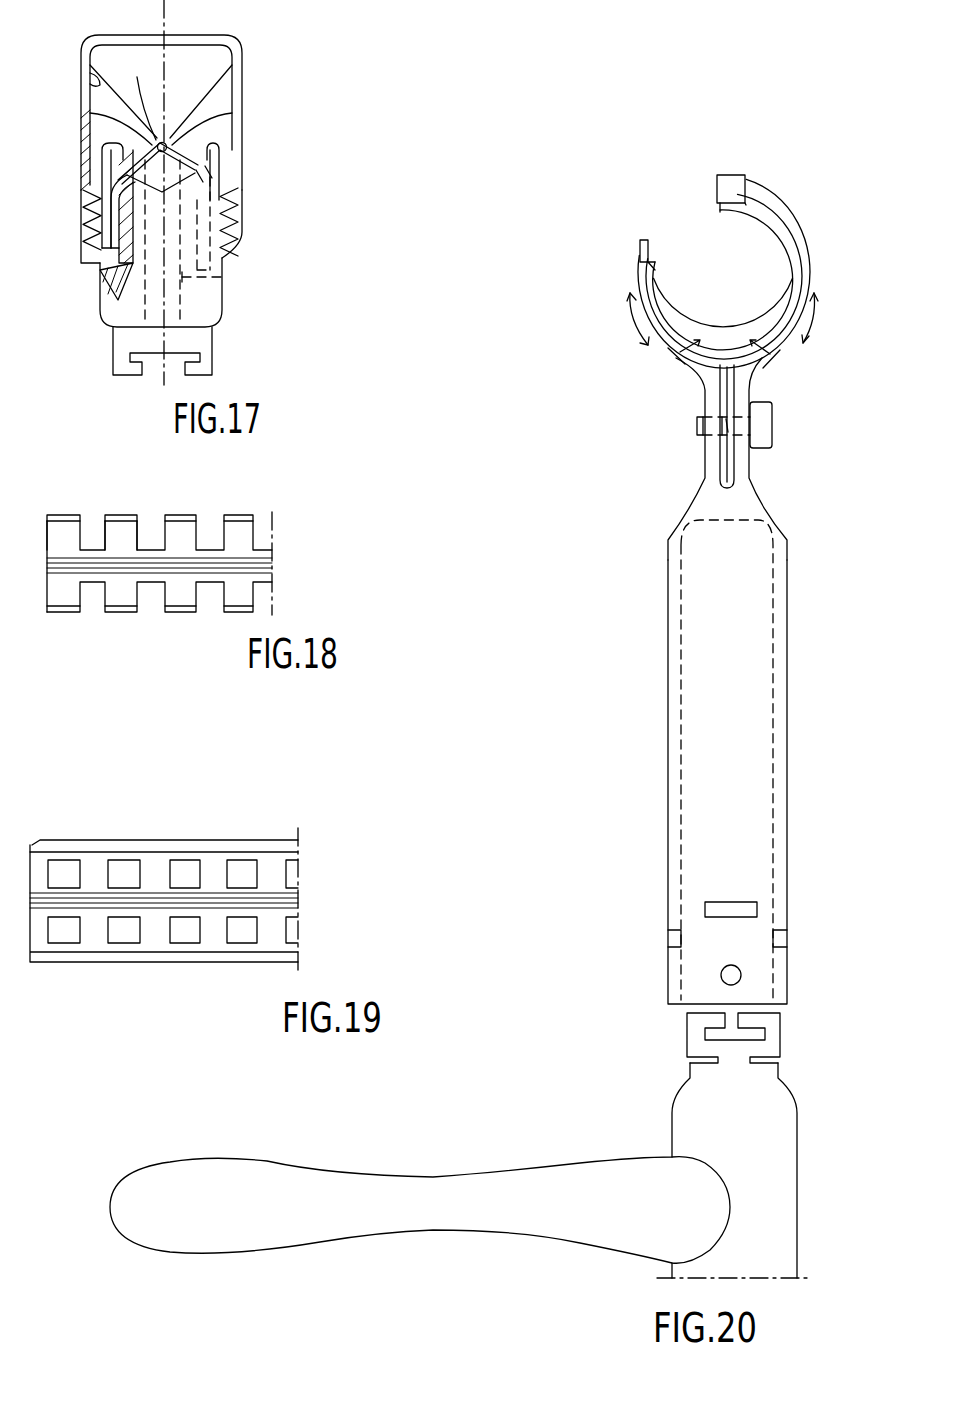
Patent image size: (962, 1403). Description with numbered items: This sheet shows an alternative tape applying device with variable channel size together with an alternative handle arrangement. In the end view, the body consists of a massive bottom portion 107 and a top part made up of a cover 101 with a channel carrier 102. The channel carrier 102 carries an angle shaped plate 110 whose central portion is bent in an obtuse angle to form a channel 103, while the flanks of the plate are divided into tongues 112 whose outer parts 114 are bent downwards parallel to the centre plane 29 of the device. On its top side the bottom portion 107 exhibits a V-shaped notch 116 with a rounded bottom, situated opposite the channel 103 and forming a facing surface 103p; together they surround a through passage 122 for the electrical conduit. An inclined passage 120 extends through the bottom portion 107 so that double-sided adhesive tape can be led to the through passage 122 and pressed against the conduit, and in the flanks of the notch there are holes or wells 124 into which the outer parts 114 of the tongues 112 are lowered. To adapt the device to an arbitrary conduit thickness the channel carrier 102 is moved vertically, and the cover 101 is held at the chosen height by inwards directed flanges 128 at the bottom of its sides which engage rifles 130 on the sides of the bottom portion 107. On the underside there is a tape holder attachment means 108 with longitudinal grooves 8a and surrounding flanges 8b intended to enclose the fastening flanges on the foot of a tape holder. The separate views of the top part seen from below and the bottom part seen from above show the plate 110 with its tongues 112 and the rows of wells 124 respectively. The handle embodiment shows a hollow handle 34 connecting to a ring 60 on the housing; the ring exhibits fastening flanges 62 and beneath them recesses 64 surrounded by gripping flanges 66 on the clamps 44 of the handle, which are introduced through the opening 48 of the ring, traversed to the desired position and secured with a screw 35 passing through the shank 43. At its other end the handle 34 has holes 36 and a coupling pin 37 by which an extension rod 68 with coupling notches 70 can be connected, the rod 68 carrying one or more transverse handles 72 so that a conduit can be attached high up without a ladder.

In FIG. 17, the centre plane 29 is at (166, 6).
In FIG. 17, the cover 101 is at (234, 47).
In FIG. 17, the channel carrier 102 is at (90, 73).
In FIG. 17, the channel 103 is at (164, 135).
In FIG. 18, the channel 103 is at (262, 565).
In FIG. 17, the facing surface 103p is at (232, 113).
In FIG. 19, the facing surface 103p is at (290, 897).
In FIG. 17, the angle shaped plate 110 is at (90, 113).
In FIG. 18, the angle shaped plate 110 is at (265, 529).
In FIG. 17, the through passage 122 is at (158, 116).
In FIG. 17, the V-shaped notch 116 is at (102, 147).
In FIG. 19, the V-shaped notch 116 is at (280, 905).
In FIG. 17, the outer parts of the tongues 114 is at (86, 208).
In FIG. 18, the outer parts of the tongues 114 is at (230, 517).
In FIG. 17, the inwards directed flanges 128 is at (88, 245).
In FIG. 17, the rifles 130 is at (236, 238).
In FIG. 19, the rifles 130 is at (285, 828).
In FIG. 17, the inclined passage 120 is at (227, 277).
In FIG. 17, the bottom portion 107 is at (222, 303).
In FIG. 19, the bottom portion 107 is at (30, 852).
In FIG. 17, the tape holder attachment means 108 is at (205, 342).
In FIG. 17, the longitudinal grooves 8a is at (130, 353).
In FIG. 17, the surrounding flanges 8b is at (138, 370).
In FIG. 18, the tongues 112 is at (62, 535).
In FIG. 19, the holes or wells 124 is at (185, 870).
In FIG. 20, the opening of the ring 48 is at (717, 183).
In FIG. 20, the ring 60 is at (745, 190).
In FIG. 20, the fastening flanges 62 is at (640, 252).
In FIG. 20, the recesses 64 is at (640, 318).
In FIG. 20, the gripping flanges 66 is at (780, 352).
In FIG. 20, the clamps 44 is at (686, 372).
In FIG. 20, the stem 43 is at (716, 403).
In FIG. 20, the screw 35 is at (772, 426).
In FIG. 20, the handle 34 is at (668, 716).
In FIG. 20, the holes 36 is at (710, 905).
In FIG. 20, the coupling pin 37 is at (731, 965).
In FIG. 20, the coupling notches 70 is at (715, 1033).
In FIG. 20, the extension rod 68 is at (795, 1125).
In FIG. 20, the transverse handles 72 is at (265, 1163).